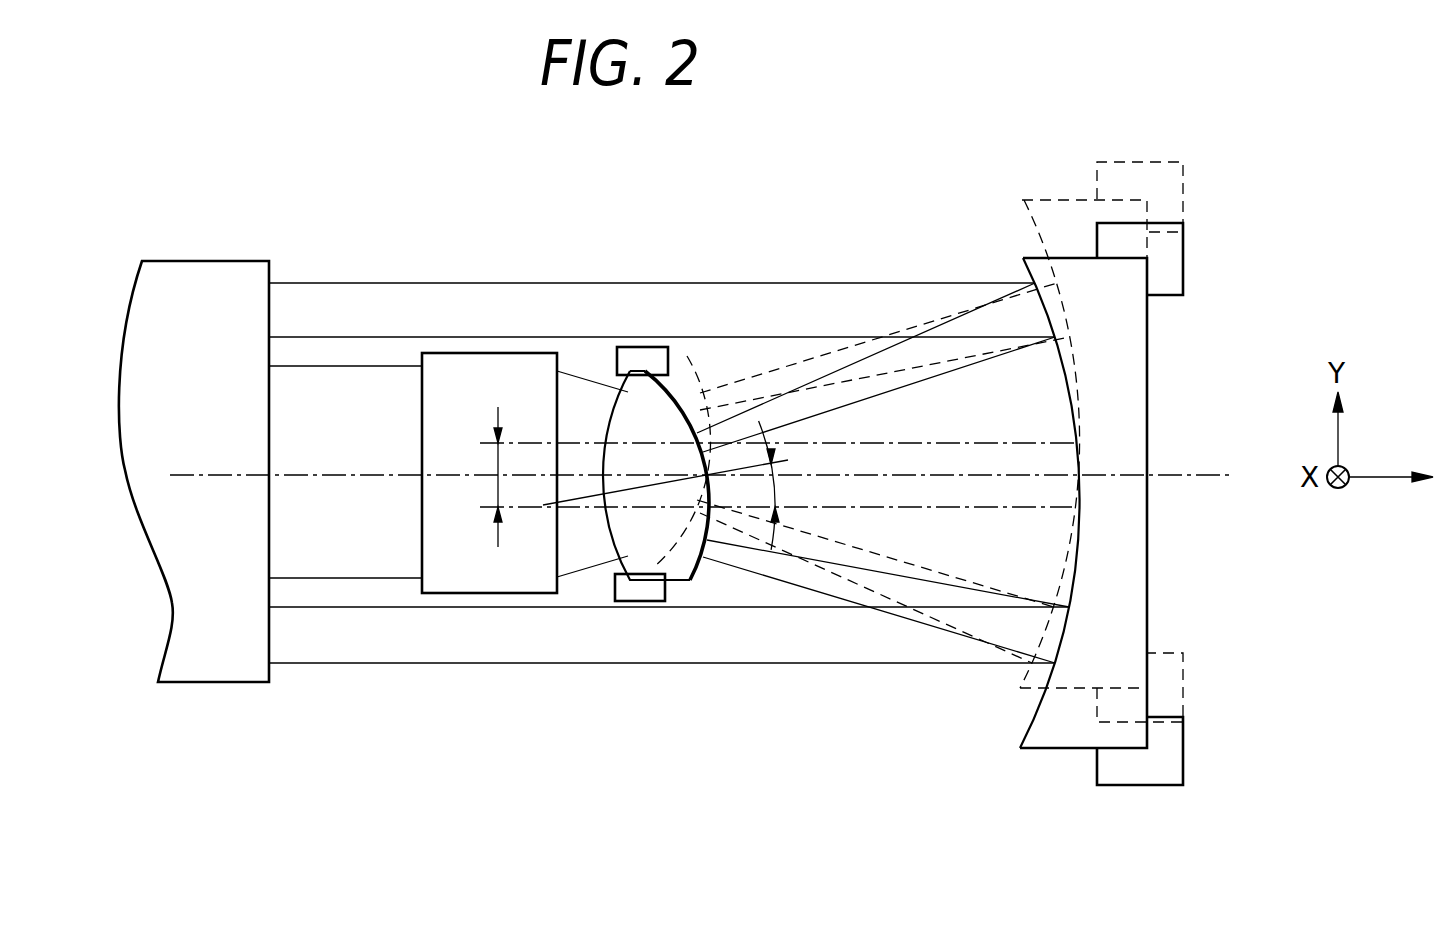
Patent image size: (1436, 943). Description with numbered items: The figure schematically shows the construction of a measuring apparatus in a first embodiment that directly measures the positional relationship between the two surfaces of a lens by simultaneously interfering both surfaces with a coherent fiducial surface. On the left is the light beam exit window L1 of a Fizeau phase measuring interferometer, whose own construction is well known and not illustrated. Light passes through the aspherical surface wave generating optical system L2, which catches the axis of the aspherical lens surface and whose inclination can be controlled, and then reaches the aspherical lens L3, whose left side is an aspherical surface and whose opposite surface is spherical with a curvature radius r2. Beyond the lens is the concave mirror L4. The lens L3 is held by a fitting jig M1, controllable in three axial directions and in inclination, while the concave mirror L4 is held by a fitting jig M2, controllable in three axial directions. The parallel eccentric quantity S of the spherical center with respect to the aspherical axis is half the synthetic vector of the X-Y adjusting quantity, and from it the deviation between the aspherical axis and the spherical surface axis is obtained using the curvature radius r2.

The light beam exit window L1 is at (222, 672).
The aspherical surface wave generating optical system L2 is at (490, 583).
The aspherical lens L3 is at (677, 582).
The concave mirror L4 is at (1052, 743).
The fitting jig M1 is at (630, 348).
The fitting jig M2 is at (1138, 777).
The curvature radius of the opposite surface r2 is at (640, 490).
The parallel eccentric quantity S is at (478, 477).